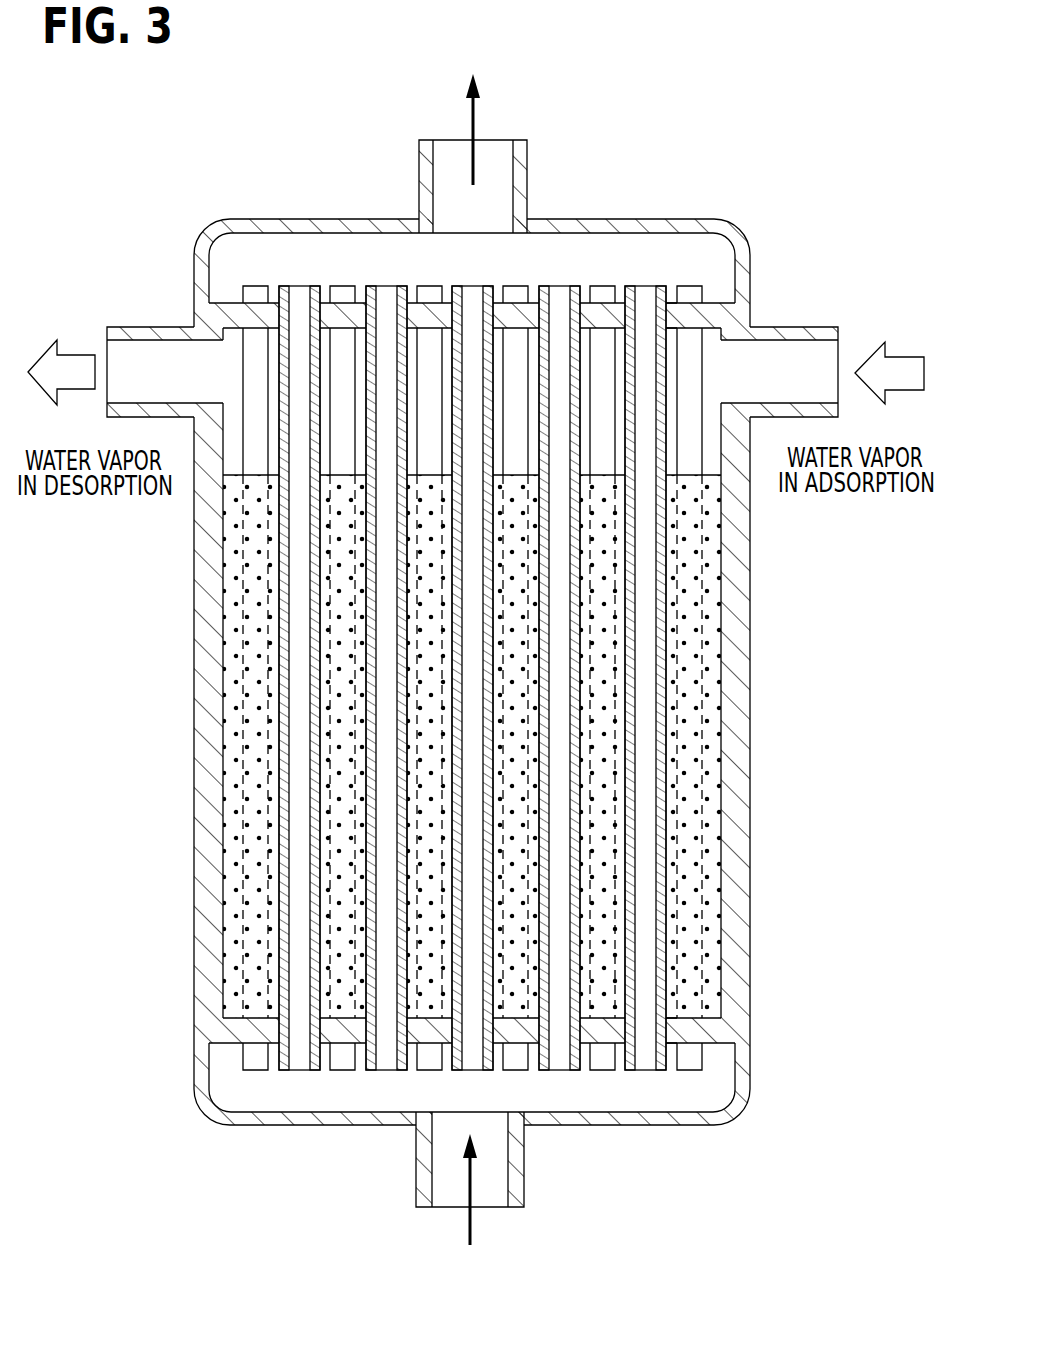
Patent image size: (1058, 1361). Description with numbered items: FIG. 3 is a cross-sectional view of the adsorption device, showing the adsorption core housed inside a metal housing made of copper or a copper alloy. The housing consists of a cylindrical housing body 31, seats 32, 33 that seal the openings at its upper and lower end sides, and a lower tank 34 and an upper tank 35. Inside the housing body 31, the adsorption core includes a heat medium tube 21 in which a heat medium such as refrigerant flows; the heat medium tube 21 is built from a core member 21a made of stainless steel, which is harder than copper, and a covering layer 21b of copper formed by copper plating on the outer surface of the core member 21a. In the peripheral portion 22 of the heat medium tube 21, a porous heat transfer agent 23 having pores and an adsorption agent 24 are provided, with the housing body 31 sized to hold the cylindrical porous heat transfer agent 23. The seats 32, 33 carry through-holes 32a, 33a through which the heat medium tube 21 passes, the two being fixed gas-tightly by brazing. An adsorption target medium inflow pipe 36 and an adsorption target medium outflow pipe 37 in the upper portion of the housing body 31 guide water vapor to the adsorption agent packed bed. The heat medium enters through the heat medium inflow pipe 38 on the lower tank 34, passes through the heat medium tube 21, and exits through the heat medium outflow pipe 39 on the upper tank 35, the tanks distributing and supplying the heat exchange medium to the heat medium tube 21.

The heat medium tube 21 is at (446, 665).
The core member 21a is at (309, 1070).
The covering layer 21b is at (277, 1068).
The peripheral portion 22 is at (225, 724).
The porous heat transfer agent 23 is at (225, 818).
The adsorption agent 24 is at (225, 880).
The housing body 31 is at (735, 661).
The seat 32 is at (750, 1028).
The through-hole 32a is at (660, 1030).
The seat 33 is at (718, 303).
The through-hole 33a is at (660, 312).
The lower tank 34 is at (576, 1128).
The upper tank 35 is at (641, 220).
The adsorption target medium inflow pipe 36 is at (775, 327).
The adsorption target medium outflow pipe 37 is at (165, 327).
The heat medium inflow pipe 38 is at (417, 1167).
The heat medium outflow pipe 39 is at (520, 167).